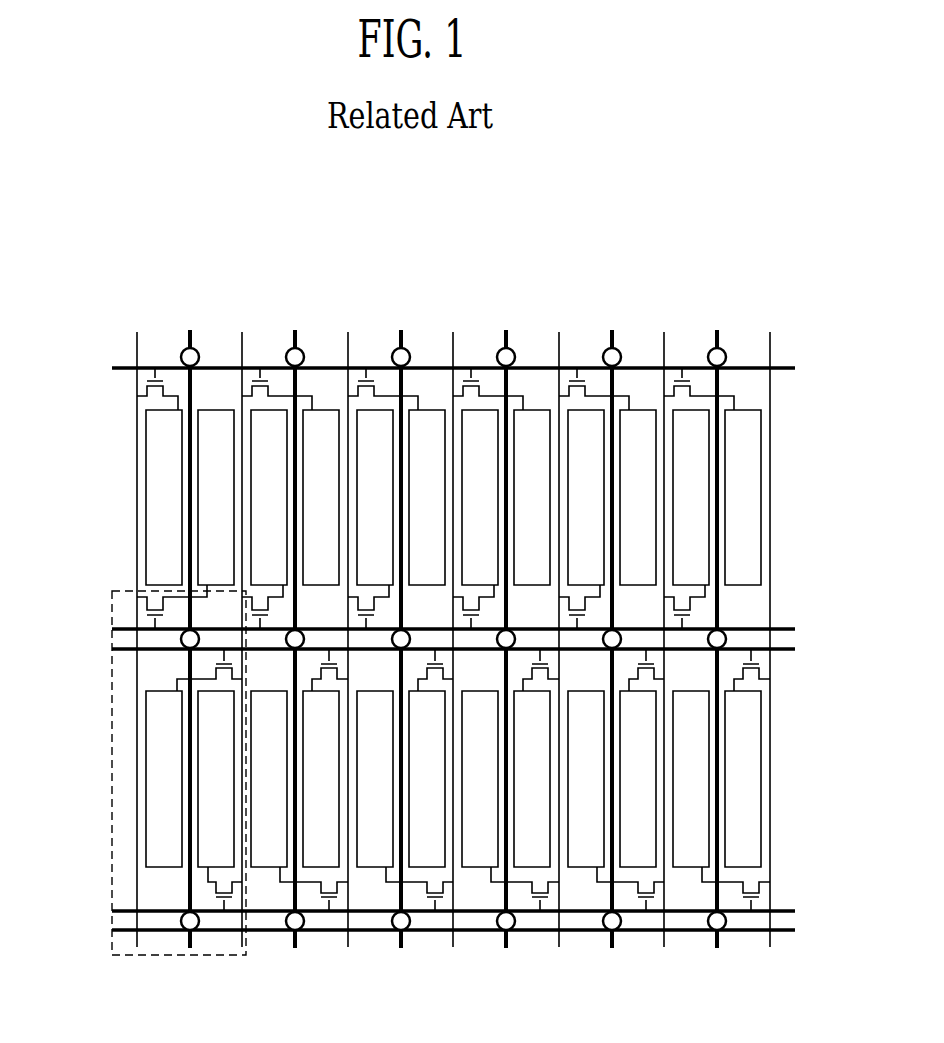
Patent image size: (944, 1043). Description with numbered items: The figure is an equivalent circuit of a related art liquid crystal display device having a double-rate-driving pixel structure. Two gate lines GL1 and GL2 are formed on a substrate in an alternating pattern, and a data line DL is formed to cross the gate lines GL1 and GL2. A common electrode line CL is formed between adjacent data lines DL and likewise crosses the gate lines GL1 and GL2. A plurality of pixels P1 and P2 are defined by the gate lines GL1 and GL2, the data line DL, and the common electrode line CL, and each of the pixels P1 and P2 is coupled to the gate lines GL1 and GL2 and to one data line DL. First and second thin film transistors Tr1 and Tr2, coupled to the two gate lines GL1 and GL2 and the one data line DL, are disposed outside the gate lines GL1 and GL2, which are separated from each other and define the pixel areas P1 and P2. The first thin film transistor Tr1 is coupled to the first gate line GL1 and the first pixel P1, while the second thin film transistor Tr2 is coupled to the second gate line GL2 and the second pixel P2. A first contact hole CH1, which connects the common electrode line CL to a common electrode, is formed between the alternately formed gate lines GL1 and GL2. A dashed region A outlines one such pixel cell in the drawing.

The data line DL is at (137, 332).
The common electrode line CL is at (190, 330).
The first gate line GL1 is at (112, 629).
The second gate line GL2 is at (112, 368).
The first thin film transistor Tr1 is at (142, 602).
The second thin film transistor Tr2 is at (142, 392).
The first pixel P1 is at (453, 638).
The second pixel P2 is at (453, 638).
The first contact hole CH1 is at (186, 931).
The region A is at (229, 955).